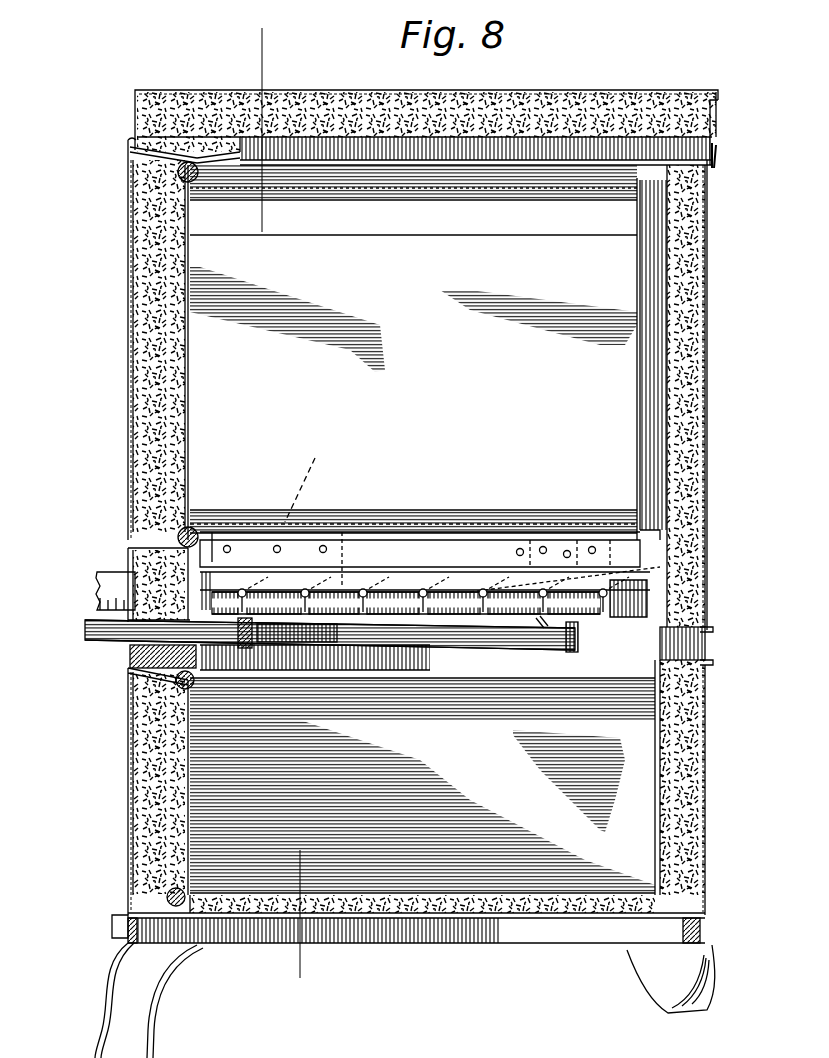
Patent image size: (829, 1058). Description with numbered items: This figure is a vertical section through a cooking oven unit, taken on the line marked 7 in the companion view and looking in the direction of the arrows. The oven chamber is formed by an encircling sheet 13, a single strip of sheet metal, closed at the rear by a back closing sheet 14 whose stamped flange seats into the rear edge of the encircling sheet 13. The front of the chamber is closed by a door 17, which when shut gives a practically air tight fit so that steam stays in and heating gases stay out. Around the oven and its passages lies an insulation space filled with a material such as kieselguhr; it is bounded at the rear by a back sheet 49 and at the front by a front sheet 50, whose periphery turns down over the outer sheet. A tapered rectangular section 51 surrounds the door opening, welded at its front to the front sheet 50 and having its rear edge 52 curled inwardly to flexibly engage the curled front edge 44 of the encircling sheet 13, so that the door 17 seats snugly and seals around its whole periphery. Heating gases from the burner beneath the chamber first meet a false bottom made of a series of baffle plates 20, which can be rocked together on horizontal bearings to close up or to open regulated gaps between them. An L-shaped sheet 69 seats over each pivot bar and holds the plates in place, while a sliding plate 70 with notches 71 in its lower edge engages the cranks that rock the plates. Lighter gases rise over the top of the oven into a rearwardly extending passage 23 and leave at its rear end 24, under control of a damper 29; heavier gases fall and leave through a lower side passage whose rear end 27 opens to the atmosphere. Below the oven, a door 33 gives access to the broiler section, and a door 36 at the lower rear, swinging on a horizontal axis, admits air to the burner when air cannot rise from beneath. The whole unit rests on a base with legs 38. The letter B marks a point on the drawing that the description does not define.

The section line 7- 7 is at (272, 55).
The encircling sheet 13 is at (430, 530).
The back closing sheet 14 is at (700, 441).
The door 17 is at (121, 387).
The baffle plates 20 is at (262, 590).
The rearwardly extending passage 23 is at (370, 148).
The rear end of passage 24 is at (693, 157).
The rear end of side passage 27 is at (305, 479).
The damper 29 is at (718, 152).
The broiler door 33 is at (121, 818).
The air admission door 36 is at (708, 651).
The legs 38 is at (147, 995).
The curled front edge 44 is at (177, 172).
The back sheet 49 is at (709, 380).
The front sheet 50 is at (133, 117).
The rectangular section 51 is at (165, 150).
The rear edge of rectangular section 52 is at (200, 165).
The L-shaped sheet 69 is at (347, 573).
The sliding plate 70 is at (95, 585).
The notches 71 is at (545, 620).
The point B is at (660, 642).